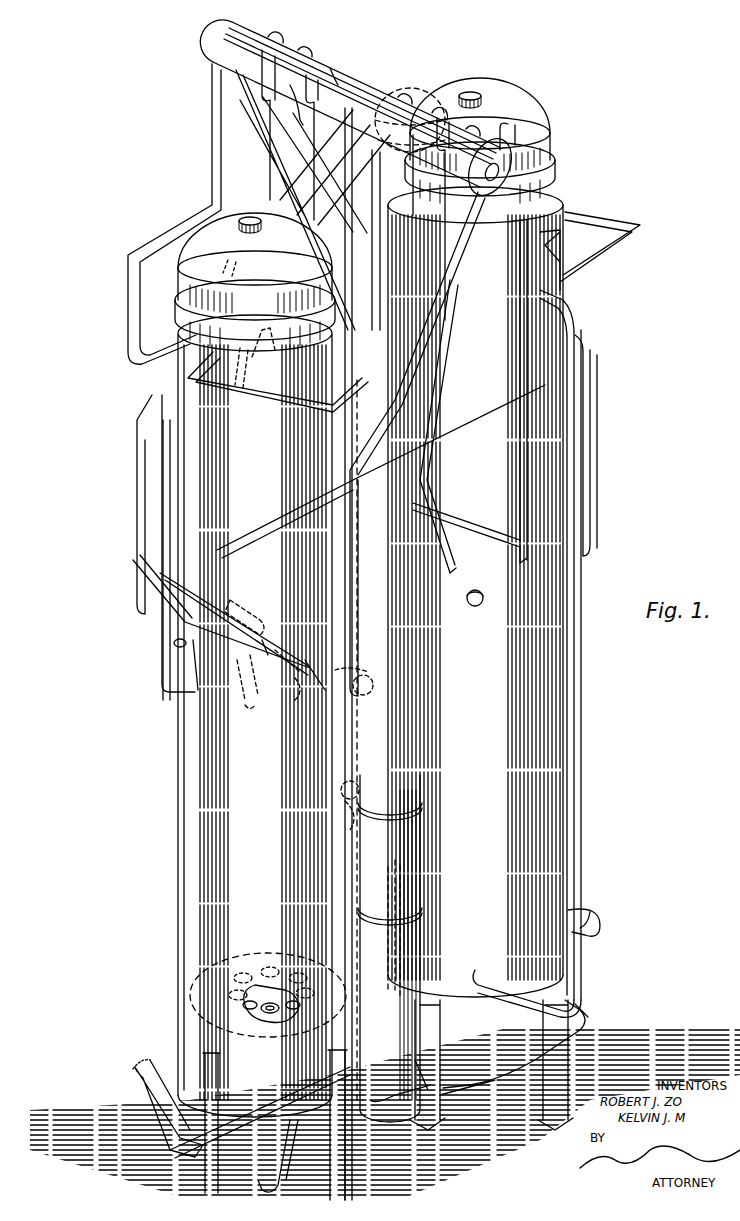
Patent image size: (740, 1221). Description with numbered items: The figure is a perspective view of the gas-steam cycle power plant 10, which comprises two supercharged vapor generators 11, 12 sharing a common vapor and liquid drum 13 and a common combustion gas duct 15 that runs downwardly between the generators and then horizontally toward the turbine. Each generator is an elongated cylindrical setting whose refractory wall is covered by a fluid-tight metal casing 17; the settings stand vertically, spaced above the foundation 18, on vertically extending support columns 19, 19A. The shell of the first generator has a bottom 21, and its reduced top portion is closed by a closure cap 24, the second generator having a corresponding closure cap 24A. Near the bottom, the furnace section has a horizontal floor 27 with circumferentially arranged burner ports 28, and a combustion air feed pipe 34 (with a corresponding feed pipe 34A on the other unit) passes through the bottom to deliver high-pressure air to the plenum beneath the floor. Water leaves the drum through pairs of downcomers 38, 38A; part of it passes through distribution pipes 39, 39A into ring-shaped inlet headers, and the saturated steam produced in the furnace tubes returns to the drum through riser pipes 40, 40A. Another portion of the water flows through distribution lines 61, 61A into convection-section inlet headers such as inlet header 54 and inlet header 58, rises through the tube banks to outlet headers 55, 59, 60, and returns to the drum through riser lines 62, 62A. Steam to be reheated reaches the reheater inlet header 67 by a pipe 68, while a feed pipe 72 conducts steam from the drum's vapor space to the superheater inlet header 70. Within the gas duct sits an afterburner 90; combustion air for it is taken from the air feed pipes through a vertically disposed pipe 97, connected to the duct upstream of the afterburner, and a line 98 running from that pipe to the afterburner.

The gas-steam cycle power plant 10 is at (658, 103).
The supercharged vapor generator 11 is at (226, 656).
The supercharged vapor generator 12 is at (531, 531).
The vapor and liquid drum 13 is at (393, 90).
The combustion gas duct 15 is at (410, 729).
The fluid-tight metal casing 17 is at (178, 771).
The foundation 18 is at (410, 1160).
The support columns 19 is at (203, 1180).
The support columns 19A is at (440, 1092).
The bottom 21 is at (307, 1118).
The closure cap 24 is at (213, 233).
The closure cap 24A is at (520, 91).
The horizontal floor 27 is at (275, 1020).
The burner ports 28 is at (272, 1005).
The combustion air feed pipe 34 is at (143, 1097).
The combustion air feed pipe 34A is at (514, 1051).
The downcomers 38 is at (283, 193).
The downcomers 38A is at (300, 118).
The distribution pipes 39 is at (247, 1115).
The distribution pipes 39A is at (475, 983).
The riser pipes 40 is at (393, 380).
The riser pipes 40A is at (590, 457).
The inlet header 54 is at (242, 695).
The outlet header 55 is at (245, 383).
The inlet header 58 is at (295, 692).
The outlet header 59 is at (223, 257).
The outlet header 60 is at (278, 382).
The distribution lines 61 is at (163, 508).
The distribution pipes 61A is at (477, 523).
The riser lines 62 is at (243, 76).
The riser lines 62A is at (338, 62).
The reheater inlet header 67 is at (223, 623).
The pipe 68 is at (177, 643).
The superheater inlet header 70 is at (280, 270).
The feed pipe 72 is at (322, 92).
The afterburner 90 is at (413, 838).
The vertically disposed pipe 97 is at (360, 690).
The line 98 is at (327, 810).